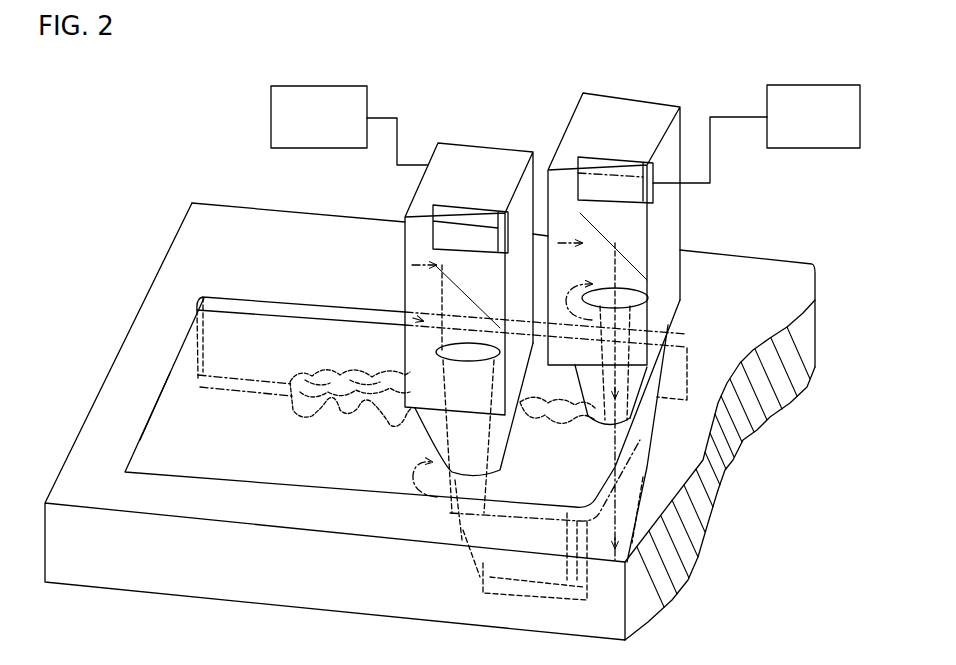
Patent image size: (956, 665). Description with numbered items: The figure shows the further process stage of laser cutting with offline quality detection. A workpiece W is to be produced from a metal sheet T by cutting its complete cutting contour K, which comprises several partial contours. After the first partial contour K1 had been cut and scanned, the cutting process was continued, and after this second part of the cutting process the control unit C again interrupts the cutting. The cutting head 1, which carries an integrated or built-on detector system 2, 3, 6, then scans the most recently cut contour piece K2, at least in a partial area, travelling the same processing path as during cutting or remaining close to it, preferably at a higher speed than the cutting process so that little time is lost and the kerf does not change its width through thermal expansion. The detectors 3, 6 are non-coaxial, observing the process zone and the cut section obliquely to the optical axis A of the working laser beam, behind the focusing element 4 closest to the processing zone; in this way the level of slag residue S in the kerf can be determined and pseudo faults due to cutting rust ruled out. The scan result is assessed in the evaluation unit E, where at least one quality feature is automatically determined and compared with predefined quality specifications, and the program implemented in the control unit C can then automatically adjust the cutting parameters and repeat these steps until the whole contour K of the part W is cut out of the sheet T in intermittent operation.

The cutting head 1 is at (478, 166).
The detector system 2 is at (649, 127).
The camera system 3 is at (649, 127).
The detector system 6 is at (614, 189).
The focusing element 4 is at (623, 299).
The metal sheet T is at (105, 450).
The workpiece W is at (180, 437).
The cutting contour K is at (177, 347).
The first partial contour K1 is at (247, 302).
The second contour piece K2 is at (623, 452).
The slag residue S is at (333, 377).
The optical axis A is at (619, 409).
The control unit C is at (319, 117).
The evaluation direction E is at (813, 116).